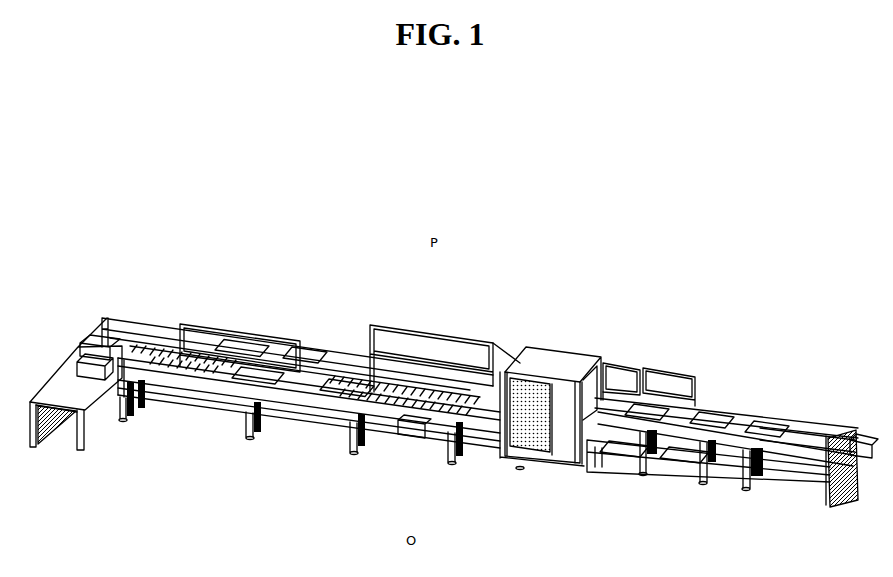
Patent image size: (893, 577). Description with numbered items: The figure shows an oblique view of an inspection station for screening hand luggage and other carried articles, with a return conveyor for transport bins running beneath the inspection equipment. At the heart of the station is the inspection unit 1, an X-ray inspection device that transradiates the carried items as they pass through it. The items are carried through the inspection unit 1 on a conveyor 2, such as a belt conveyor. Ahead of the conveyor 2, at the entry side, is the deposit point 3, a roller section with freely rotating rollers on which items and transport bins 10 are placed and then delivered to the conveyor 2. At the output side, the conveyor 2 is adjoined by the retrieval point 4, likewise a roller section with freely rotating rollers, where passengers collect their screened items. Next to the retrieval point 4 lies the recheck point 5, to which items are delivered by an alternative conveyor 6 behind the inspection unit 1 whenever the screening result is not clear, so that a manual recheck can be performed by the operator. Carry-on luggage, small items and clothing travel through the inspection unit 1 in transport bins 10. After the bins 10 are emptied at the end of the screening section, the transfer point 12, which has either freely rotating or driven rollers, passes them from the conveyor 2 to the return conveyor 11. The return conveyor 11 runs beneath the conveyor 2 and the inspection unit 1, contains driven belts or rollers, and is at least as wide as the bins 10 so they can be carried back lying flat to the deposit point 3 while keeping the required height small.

The inspection unit 1 is at (550, 368).
The conveyor 2 is at (423, 382).
The deposit point 3 is at (775, 445).
The retrieval point 4 is at (223, 338).
The recheck point 5 is at (67, 390).
The alternative conveyor 6 is at (297, 400).
The transport bins 10 is at (95, 347).
The return conveyor 11 is at (323, 413).
The transfer point 12 is at (145, 343).